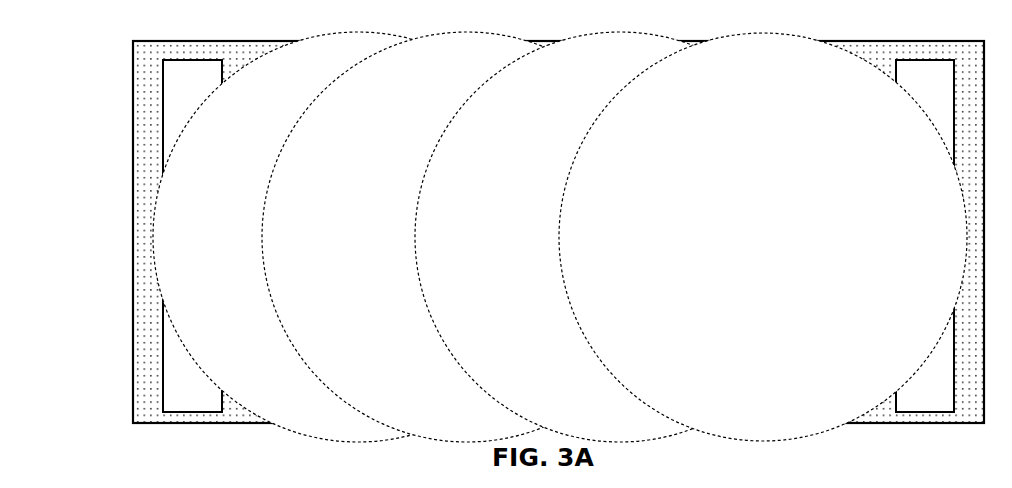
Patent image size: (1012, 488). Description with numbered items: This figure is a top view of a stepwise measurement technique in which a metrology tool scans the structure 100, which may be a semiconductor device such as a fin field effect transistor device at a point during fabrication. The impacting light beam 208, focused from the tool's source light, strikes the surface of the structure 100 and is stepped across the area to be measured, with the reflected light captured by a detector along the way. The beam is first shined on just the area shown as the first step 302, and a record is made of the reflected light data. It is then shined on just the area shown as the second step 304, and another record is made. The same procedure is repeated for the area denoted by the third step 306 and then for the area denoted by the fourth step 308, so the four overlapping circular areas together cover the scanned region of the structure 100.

The structure 100 is at (63, 80).
The impacting light beam 208 is at (265, 434).
The first step 302 is at (225, 247).
The second step 304 is at (371, 247).
The third step 306 is at (504, 247).
The fourth step 308 is at (673, 247).